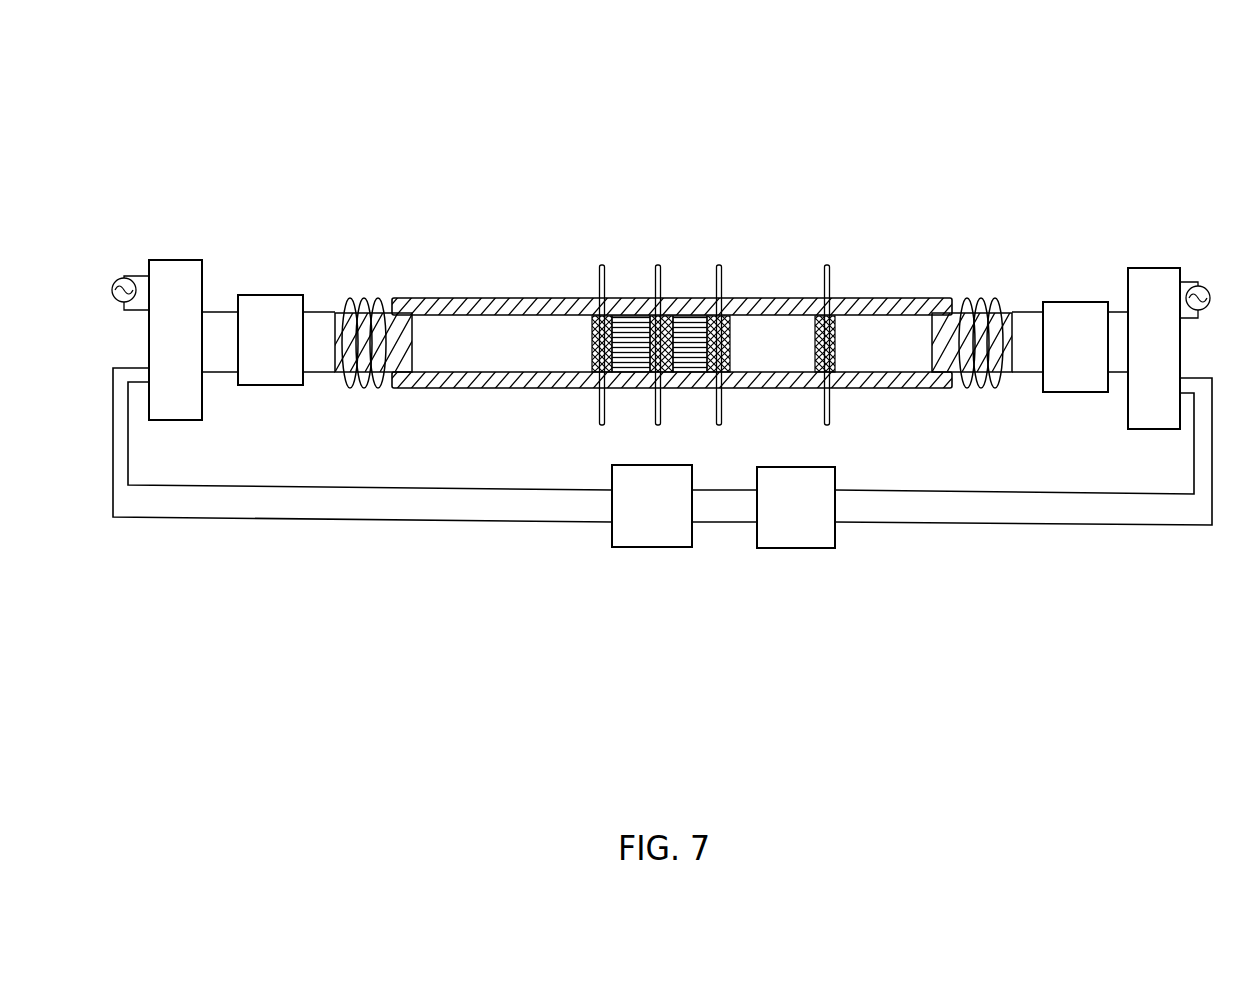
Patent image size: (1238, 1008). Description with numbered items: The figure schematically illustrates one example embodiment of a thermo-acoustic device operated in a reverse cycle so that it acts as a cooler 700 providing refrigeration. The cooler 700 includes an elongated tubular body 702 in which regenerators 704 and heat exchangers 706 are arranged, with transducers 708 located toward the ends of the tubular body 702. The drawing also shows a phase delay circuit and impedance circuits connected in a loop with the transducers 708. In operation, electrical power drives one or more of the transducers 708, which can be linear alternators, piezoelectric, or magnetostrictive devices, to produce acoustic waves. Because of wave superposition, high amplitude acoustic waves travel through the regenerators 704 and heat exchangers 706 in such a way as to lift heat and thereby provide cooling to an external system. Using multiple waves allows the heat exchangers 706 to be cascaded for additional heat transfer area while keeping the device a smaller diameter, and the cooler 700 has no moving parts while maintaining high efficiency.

The device (cooler) 700 is at (228, 86).
The elongated tubular body 702 is at (467, 297).
The regenerators 704 is at (632, 333).
The heat exchangers 706 is at (720, 322).
The transducers 708 is at (968, 315).